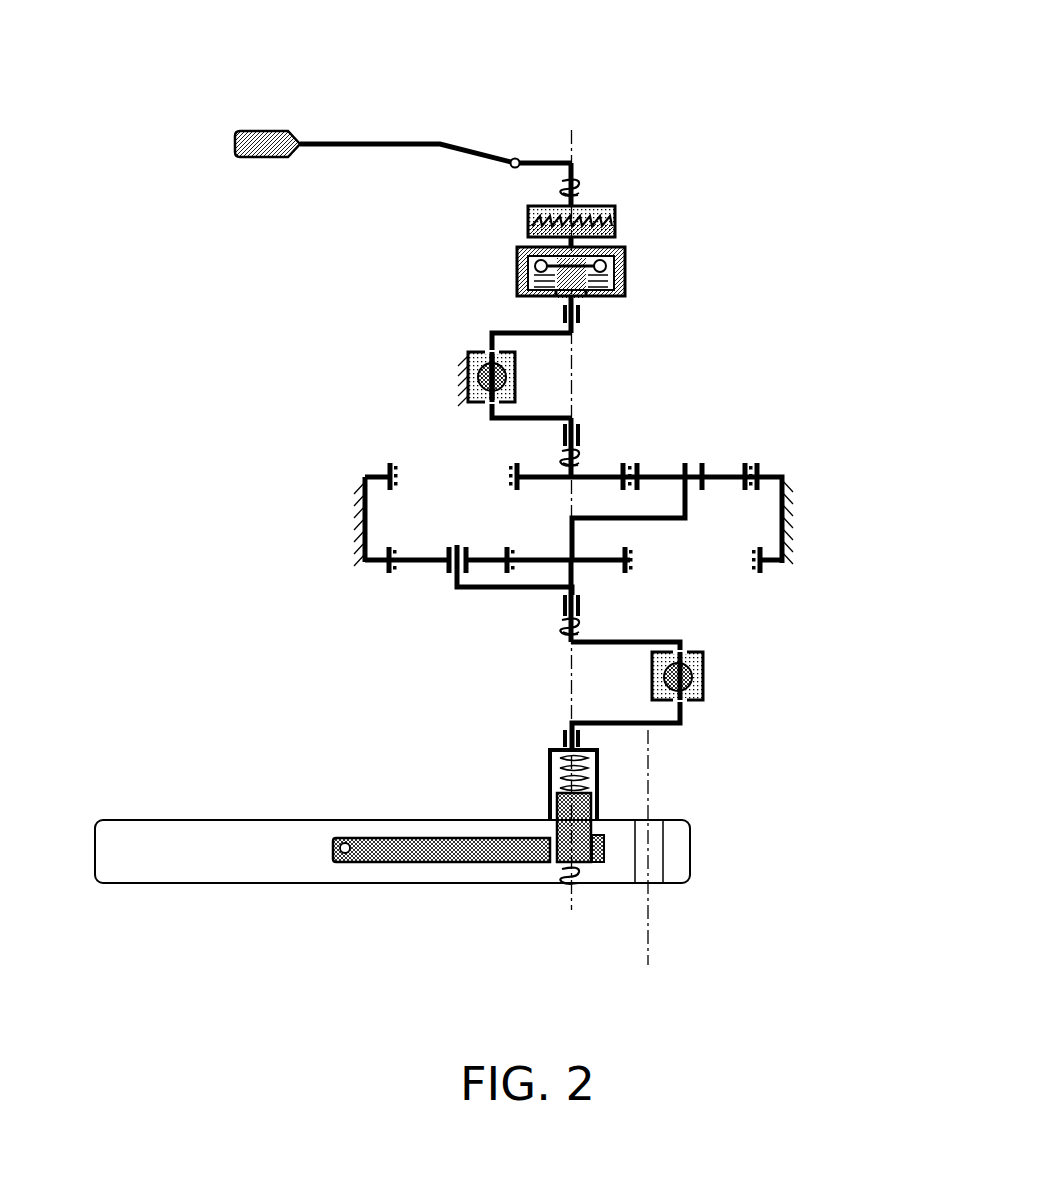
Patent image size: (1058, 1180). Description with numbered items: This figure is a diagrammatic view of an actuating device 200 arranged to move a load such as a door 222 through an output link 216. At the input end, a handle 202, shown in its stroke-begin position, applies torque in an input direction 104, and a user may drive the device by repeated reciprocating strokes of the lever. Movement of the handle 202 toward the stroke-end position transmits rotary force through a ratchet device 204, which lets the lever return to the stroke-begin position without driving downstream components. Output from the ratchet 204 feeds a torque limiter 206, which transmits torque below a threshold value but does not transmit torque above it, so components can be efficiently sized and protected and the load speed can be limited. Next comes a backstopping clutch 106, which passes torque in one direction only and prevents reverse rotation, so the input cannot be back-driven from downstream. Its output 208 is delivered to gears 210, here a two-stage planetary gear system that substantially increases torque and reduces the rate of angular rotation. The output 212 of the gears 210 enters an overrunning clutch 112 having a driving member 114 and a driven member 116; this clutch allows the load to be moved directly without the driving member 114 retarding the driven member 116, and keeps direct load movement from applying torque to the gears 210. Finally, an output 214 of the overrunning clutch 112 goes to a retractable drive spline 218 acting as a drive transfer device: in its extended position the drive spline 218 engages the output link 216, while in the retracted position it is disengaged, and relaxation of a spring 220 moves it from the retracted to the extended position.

The actuating device 200 is at (406, 60).
The handle 202 is at (248, 130).
The input direction 104 is at (559, 184).
The ratchet device 204 is at (617, 203).
The torque limiter 206 is at (517, 271).
The backstopping clutch 106 is at (450, 341).
The output 208 is at (545, 443).
The gears 210 is at (713, 452).
The output 212 is at (545, 628).
The overrunning clutch 112 is at (730, 640).
The driving member 114 is at (668, 675).
The driven member 116 is at (668, 681).
The output 214 is at (588, 737).
The output link 216 is at (395, 833).
The retractable drive spline 218 is at (620, 778).
The spring 220 is at (587, 783).
The door 222 is at (230, 820).